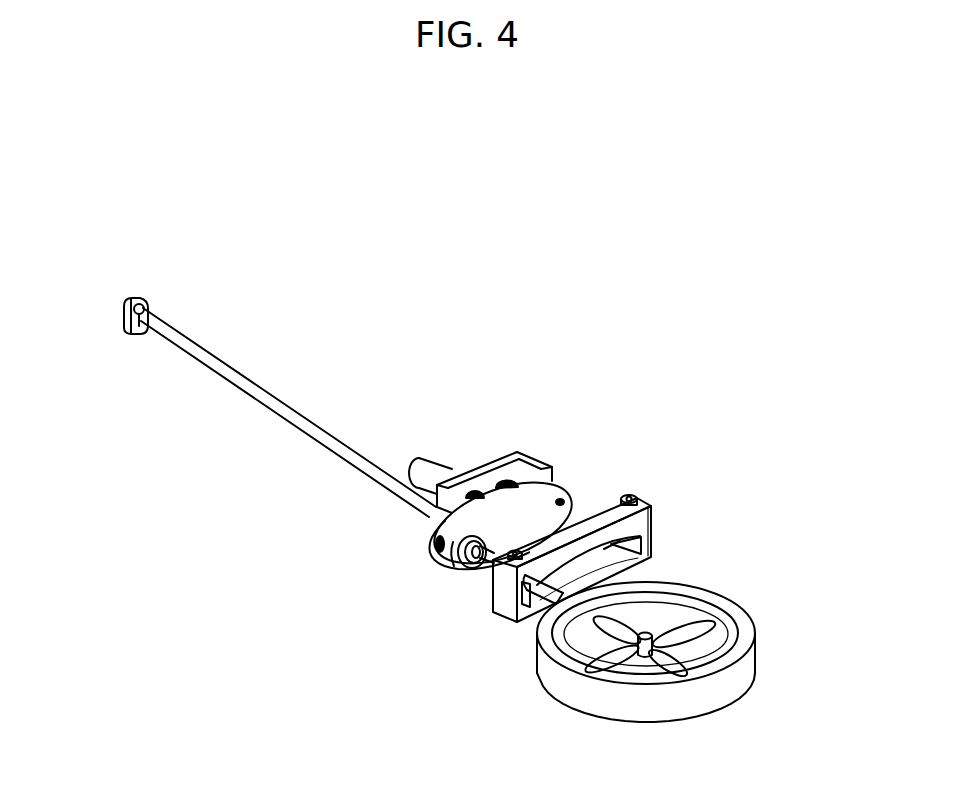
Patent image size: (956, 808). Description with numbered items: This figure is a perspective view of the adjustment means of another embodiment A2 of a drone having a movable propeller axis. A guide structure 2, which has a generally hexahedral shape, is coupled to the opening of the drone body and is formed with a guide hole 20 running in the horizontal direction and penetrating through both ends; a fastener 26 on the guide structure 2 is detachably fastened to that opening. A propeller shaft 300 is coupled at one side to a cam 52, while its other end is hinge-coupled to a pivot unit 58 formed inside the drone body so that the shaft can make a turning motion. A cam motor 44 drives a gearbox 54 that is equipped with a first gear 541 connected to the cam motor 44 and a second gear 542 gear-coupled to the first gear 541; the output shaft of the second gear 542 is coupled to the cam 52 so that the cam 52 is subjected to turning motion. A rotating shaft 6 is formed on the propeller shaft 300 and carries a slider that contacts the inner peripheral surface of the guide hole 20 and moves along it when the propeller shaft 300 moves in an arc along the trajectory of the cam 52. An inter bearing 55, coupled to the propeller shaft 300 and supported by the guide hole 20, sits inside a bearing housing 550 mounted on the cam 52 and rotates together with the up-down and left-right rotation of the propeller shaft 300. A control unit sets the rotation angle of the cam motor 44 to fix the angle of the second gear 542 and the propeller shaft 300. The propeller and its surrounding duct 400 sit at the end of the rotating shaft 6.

The another embodiment A2 is at (392, 241).
The pivot unit 58 is at (123, 337).
The propeller shaft 300 is at (275, 399).
The cam motor 44 is at (431, 459).
The gearbox 54 is at (530, 450).
The first gear 541 is at (469, 486).
The second gear 542 is at (503, 475).
The cam 52 is at (558, 487).
The bearing housing 550 is at (456, 560).
The inter bearing 55 is at (470, 568).
The guide structure 2 is at (655, 509).
The guide hole 20 is at (653, 531).
The fastener 26 is at (630, 494).
The rotating shaft 6 is at (524, 607).
The wheel with propeller 400 is at (703, 609).